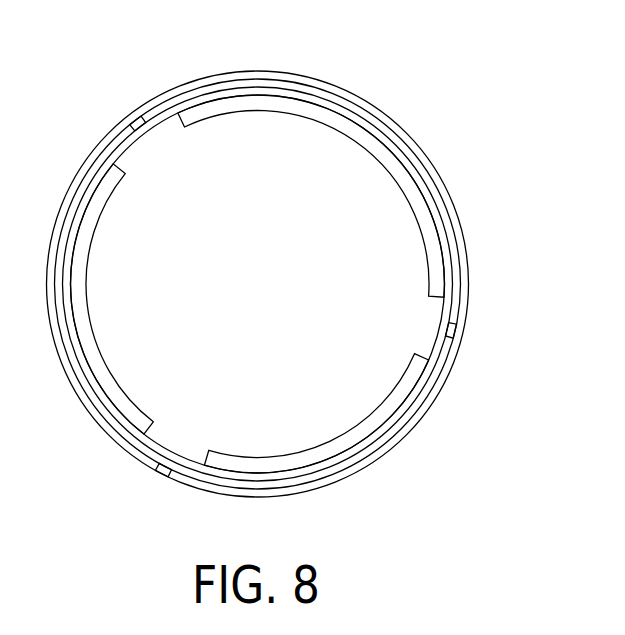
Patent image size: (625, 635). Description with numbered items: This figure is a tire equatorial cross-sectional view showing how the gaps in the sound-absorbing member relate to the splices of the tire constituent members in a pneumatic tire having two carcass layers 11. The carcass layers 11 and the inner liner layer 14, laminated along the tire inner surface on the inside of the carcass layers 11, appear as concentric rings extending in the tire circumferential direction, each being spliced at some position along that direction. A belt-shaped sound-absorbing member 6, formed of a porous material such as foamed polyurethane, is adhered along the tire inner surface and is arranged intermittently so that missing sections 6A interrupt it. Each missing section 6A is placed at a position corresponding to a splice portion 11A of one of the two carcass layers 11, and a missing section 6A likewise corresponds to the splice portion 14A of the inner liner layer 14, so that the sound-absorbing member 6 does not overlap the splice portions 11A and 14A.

The sound-absorbing member 6 is at (348, 125).
The missing section 6A is at (127, 147).
The carcass layer 11 is at (467, 289).
The splice portion of the carcass layer 11A is at (456, 330).
The inner liner layer 14 is at (161, 105).
The splice portion of the inner liner layer 14A is at (133, 124).